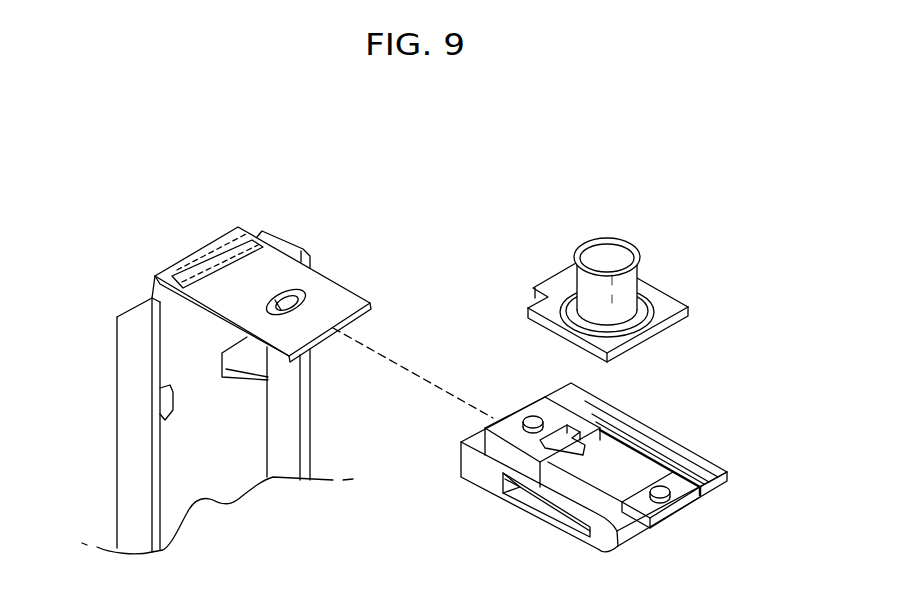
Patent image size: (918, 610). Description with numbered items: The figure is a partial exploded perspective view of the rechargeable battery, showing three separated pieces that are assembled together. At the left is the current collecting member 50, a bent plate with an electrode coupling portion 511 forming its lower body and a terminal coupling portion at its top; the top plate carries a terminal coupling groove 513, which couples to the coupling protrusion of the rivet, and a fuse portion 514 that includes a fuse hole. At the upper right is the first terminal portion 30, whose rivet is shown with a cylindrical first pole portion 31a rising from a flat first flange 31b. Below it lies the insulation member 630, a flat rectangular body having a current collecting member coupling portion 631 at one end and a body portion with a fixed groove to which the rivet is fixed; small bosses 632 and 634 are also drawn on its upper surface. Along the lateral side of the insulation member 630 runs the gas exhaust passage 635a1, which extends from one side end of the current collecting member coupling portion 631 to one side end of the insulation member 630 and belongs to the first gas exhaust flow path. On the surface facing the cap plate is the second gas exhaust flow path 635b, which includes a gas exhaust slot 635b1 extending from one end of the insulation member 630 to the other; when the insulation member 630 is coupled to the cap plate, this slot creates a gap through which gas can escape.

The bracket 50 is at (118, 284).
The electrode coupling portion 511 is at (213, 467).
The terminal coupling groove 513 is at (293, 306).
The fuse portion 514 is at (226, 246).
The first terminal portion 30 is at (573, 222).
The first pole portion 31a is at (587, 287).
The first flange 31b is at (665, 307).
The insulation member 630 is at (664, 529).
The current collecting member coupling portion 631 is at (480, 483).
The boss 632 is at (533, 418).
The boss 634 is at (672, 485).
The gas exhaust passage 635a1 is at (548, 503).
The second gas exhaust flow path 635b is at (692, 478).
The gas exhaust slot 635b1 is at (687, 435).